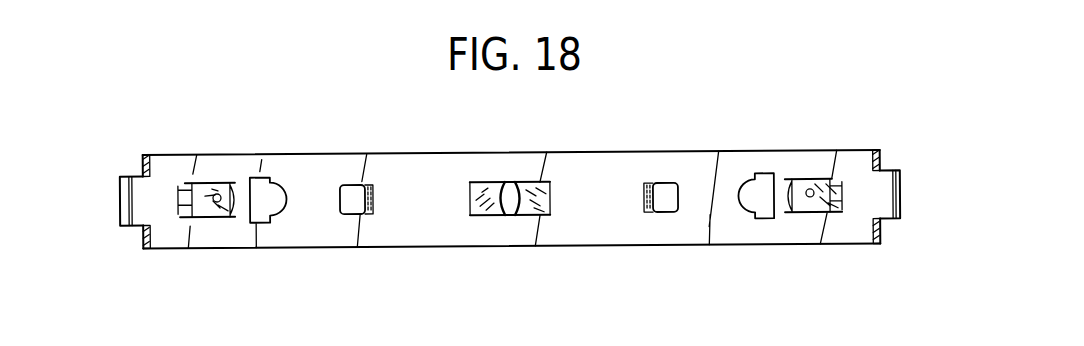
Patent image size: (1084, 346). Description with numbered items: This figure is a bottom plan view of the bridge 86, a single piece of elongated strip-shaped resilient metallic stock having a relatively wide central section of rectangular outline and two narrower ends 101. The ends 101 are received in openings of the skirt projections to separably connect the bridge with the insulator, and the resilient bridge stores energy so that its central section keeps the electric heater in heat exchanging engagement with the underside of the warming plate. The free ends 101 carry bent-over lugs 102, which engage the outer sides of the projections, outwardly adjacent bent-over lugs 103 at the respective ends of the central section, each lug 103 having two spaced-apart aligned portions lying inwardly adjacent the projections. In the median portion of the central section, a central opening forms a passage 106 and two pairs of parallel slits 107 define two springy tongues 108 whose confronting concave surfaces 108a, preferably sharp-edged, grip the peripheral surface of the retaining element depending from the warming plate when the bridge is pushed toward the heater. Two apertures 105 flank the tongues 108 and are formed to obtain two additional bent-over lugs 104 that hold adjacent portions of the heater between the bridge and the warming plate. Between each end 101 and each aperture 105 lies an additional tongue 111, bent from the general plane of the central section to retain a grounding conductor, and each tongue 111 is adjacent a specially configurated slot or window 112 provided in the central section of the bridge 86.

The bridge 86 is at (282, 139).
The ends 101 is at (142, 152).
The bent-over lugs 102 is at (124, 224).
The bent-over lugs 103 is at (150, 162).
The bent-over lugs 104 is at (372, 186).
The apertures 105 is at (352, 196).
The passage 106 is at (512, 182).
The slits 107 is at (478, 171).
The springy tongues 108 is at (535, 207).
The concave surfaces 108a is at (522, 200).
The additional tongues 111 is at (205, 205).
The slots or windows 112 is at (262, 206).